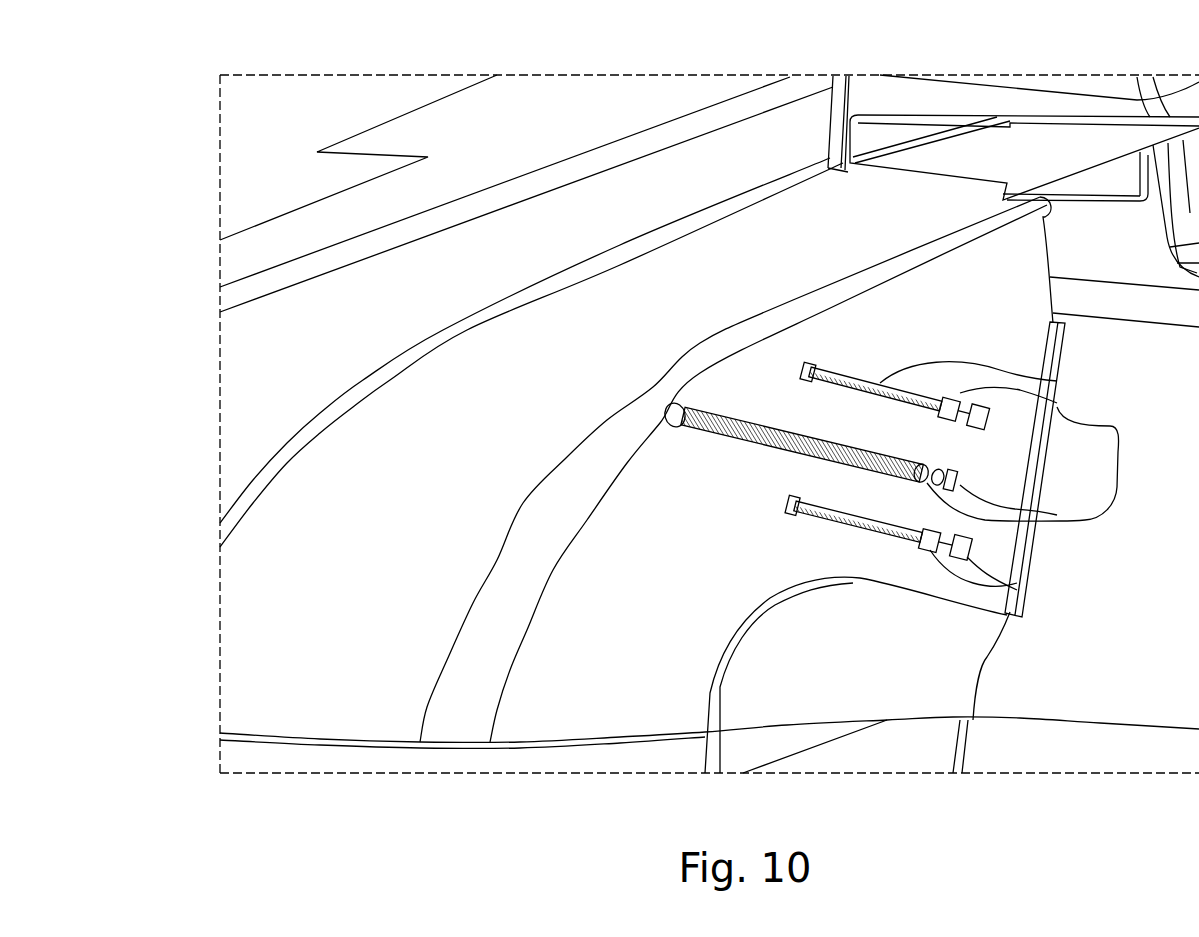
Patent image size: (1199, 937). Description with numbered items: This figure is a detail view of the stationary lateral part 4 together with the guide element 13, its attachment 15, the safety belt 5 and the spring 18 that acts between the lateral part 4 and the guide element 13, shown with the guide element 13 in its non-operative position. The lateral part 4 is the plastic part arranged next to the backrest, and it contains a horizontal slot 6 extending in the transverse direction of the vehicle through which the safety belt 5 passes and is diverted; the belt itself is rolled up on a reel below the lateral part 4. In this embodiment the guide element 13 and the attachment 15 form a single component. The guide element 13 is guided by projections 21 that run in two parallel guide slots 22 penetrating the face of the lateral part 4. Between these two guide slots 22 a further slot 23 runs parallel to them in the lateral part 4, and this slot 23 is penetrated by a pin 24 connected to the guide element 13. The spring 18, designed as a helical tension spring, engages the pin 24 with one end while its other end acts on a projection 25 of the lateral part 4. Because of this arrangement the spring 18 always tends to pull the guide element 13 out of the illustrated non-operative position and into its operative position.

The lateral part 4 is at (243, 668).
The safety belt 5 is at (1107, 117).
The slot 6 is at (885, 137).
The guide element 13 is at (800, 513).
The attachment 15 is at (1090, 478).
The spring 18 is at (768, 443).
The projections 21 is at (1057, 403).
The guide slots 22 is at (1057, 380).
The further slot 23 is at (1027, 514).
The pin 24 is at (1027, 521).
The projection 25 is at (675, 427).